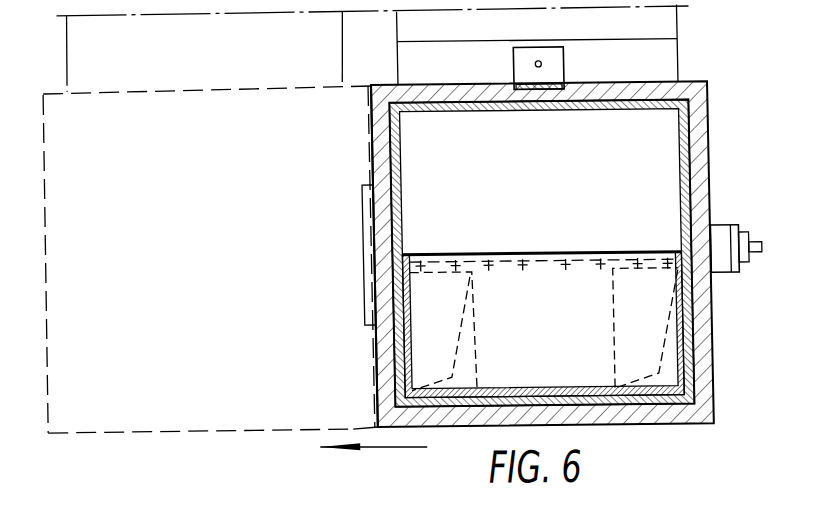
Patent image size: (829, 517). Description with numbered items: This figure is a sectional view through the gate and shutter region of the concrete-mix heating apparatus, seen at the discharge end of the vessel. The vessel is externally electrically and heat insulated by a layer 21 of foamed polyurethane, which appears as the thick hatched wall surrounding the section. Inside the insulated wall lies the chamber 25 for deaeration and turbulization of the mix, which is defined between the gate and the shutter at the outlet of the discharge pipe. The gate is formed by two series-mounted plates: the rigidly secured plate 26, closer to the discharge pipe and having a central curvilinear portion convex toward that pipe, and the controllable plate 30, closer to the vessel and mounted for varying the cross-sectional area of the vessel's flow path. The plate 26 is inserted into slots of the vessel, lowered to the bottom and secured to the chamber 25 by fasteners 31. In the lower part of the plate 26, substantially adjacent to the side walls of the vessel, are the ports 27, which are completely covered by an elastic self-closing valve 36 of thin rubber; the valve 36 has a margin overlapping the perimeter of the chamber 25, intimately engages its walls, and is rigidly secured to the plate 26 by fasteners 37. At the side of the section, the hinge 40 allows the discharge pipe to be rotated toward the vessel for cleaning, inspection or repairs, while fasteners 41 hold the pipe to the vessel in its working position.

The layer of foamed polyurethane 21 is at (382, 113).
The chamber 25 is at (393, 302).
The plate 26 is at (667, 66).
The ports 27 is at (420, 349).
The controllable plate 30 is at (662, 30).
The fasteners 31 is at (536, 66).
The elastic self-closing valve 36 is at (592, 368).
The fasteners 37 is at (430, 267).
The hinge 40 is at (360, 190).
The fasteners 41 is at (720, 262).